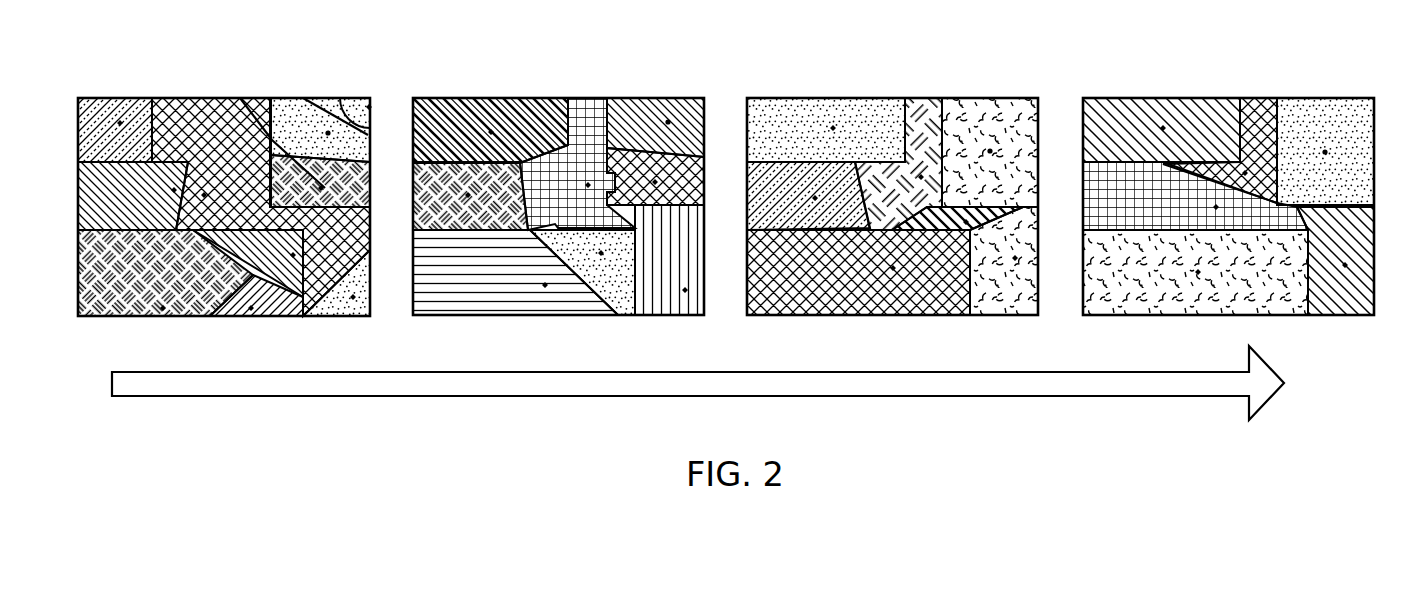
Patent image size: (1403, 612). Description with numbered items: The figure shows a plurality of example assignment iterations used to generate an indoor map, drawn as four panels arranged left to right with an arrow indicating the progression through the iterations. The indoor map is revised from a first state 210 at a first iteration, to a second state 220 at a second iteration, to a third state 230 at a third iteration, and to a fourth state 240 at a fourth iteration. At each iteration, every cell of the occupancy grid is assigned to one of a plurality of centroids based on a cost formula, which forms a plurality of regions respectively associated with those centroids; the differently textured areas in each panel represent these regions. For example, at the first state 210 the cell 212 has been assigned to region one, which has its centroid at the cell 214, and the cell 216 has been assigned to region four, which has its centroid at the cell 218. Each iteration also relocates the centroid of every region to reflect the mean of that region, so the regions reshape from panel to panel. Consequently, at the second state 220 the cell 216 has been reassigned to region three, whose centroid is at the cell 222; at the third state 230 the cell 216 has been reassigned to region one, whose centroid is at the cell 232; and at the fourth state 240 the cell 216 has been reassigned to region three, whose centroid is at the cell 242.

The first state 210 is at (211, 345).
The cell 212 is at (363, 193).
The cell 214 is at (235, 157).
The cell 216 is at (283, 112).
The cell 218 is at (328, 133).
The second state 220 is at (545, 345).
The cell 222 is at (668, 122).
The third state 230 is at (898, 345).
The cell 232 is at (990, 151).
The fourth state 240 is at (1210, 345).
The cell 242 is at (1325, 152).